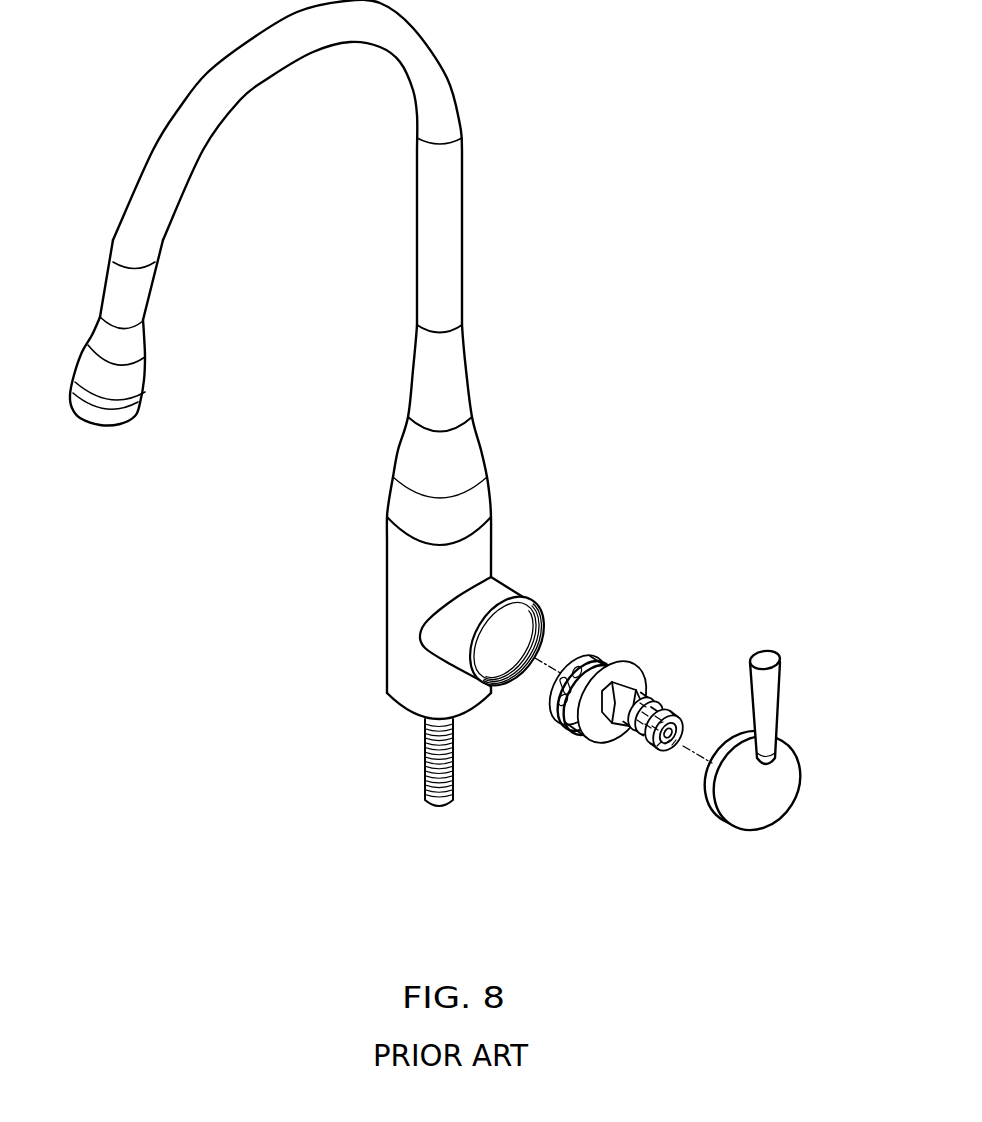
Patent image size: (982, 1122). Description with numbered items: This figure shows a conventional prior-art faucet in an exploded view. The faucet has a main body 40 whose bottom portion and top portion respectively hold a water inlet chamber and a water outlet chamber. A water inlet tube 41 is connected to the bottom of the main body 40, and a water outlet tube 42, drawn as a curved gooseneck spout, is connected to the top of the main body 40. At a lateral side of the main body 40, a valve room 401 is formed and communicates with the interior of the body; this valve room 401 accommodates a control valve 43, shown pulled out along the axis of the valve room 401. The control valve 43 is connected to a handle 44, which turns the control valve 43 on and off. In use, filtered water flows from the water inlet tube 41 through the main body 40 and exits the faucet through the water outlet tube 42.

The main body 40 is at (378, 628).
The valve room 401 is at (514, 612).
The water inlet tube 41 is at (458, 768).
The water outlet tube 42 is at (150, 165).
The control valve 43 is at (633, 676).
The handle 44 is at (778, 810).